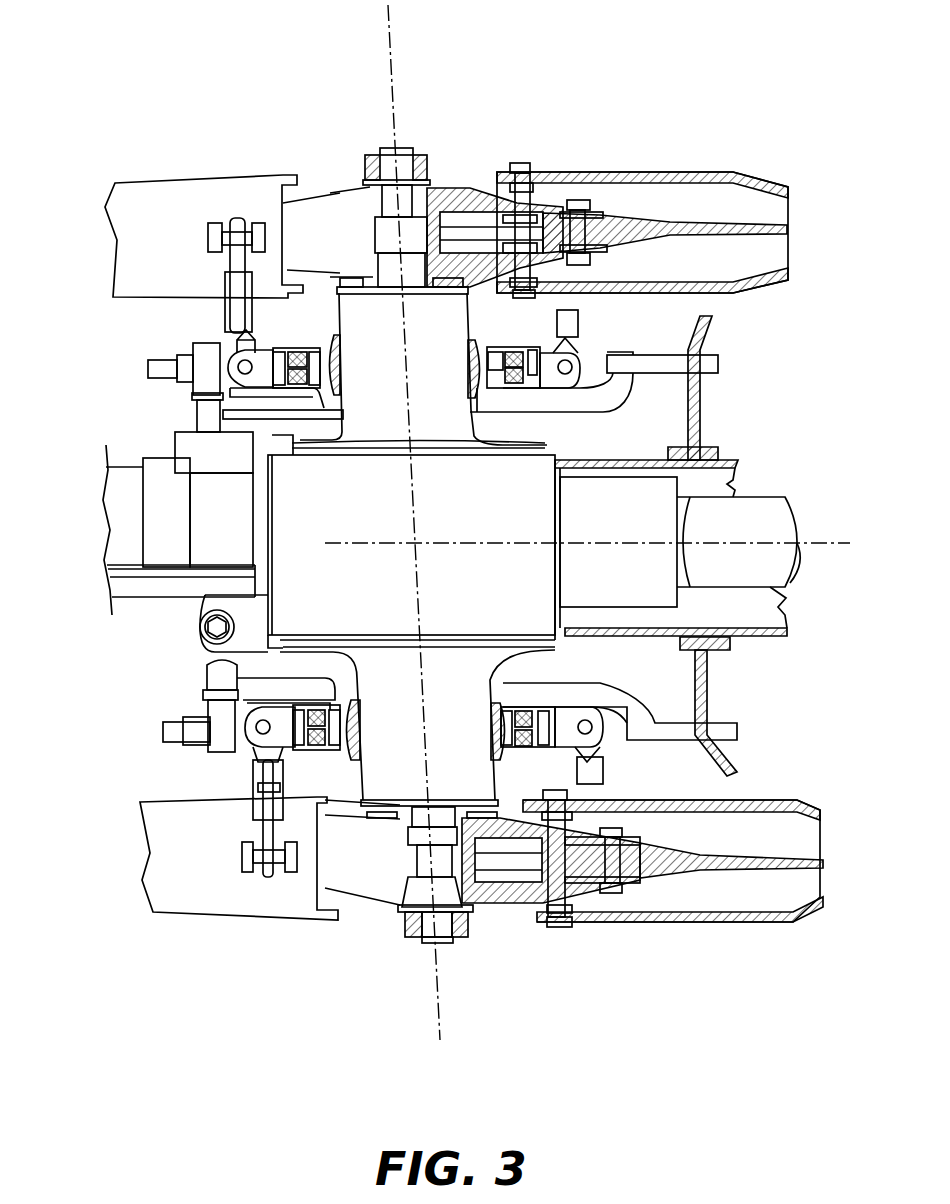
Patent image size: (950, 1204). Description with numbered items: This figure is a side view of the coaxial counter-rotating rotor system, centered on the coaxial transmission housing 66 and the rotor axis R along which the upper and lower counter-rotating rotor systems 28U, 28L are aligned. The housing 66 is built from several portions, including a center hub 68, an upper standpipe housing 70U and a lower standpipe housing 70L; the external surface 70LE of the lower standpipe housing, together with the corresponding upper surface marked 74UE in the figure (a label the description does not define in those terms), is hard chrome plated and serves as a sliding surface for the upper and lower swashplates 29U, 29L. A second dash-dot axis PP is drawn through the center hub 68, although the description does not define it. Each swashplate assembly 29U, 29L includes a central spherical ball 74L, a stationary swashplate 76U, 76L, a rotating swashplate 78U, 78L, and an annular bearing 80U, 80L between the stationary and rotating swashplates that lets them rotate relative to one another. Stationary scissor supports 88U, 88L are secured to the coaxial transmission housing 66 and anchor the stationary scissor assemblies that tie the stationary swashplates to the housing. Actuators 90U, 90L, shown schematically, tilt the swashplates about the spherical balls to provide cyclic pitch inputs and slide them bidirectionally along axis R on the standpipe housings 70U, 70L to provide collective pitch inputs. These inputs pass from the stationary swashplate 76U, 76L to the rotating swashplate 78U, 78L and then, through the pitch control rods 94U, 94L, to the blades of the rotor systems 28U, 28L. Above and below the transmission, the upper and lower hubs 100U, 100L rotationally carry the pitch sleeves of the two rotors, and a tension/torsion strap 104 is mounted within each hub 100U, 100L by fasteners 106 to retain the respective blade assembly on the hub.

The axis R is at (393, 42).
The pitch axis PP is at (823, 540).
The upper counter-rotating rotor system 28U is at (598, 156).
The lower counter-rotating rotor system 28L is at (549, 958).
The upper swashplate assembly 29U is at (731, 341).
The lower swashplate assembly 29L is at (762, 776).
The coaxial transmission housing 66 is at (385, 514).
The center hub 68 is at (548, 468).
The upper standpipe housing 70U is at (433, 391).
The lower standpipe housing 70L is at (530, 690).
The external surface of lower standpipe housing 70LE is at (480, 779).
The upper shaft end 74UE is at (336, 300).
The central spherical ball 74L is at (355, 755).
The upper stationary swashplate 76U is at (300, 350).
The lower stationary swashplate 76L is at (655, 688).
The upper rotating swashplate 78U is at (236, 348).
The lower rotating swashplate 78L is at (240, 737).
The upper annular bearing 80U is at (568, 345).
The lower annular bearing 80L is at (538, 752).
The upper stationary scissor support 88U is at (700, 418).
The lower stationary scissor support 88L is at (718, 700).
The upper actuator 90U is at (93, 551).
The lower actuator 90L is at (205, 680).
The upper pitch control rods 94U is at (235, 265).
The lower pitch control rods 94L is at (265, 833).
The upper hub 100U is at (463, 187).
The lower hub 100L is at (503, 903).
The tension/torsion strap 104 is at (622, 215).
The fasteners 106 is at (511, 163).